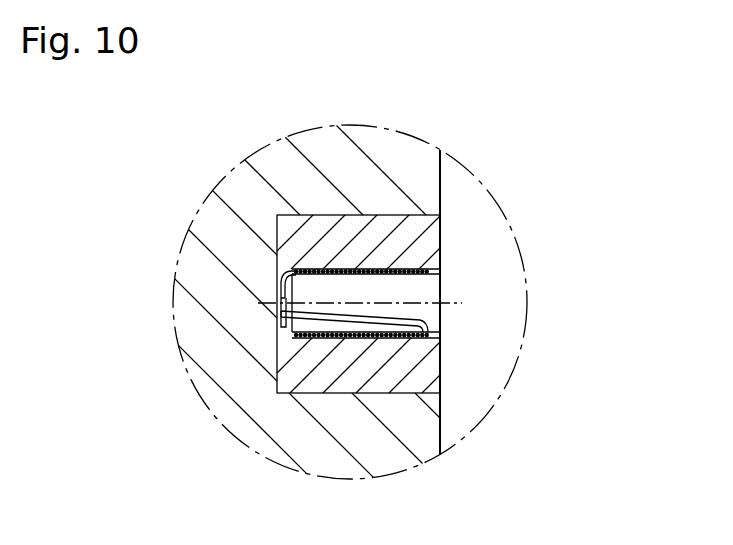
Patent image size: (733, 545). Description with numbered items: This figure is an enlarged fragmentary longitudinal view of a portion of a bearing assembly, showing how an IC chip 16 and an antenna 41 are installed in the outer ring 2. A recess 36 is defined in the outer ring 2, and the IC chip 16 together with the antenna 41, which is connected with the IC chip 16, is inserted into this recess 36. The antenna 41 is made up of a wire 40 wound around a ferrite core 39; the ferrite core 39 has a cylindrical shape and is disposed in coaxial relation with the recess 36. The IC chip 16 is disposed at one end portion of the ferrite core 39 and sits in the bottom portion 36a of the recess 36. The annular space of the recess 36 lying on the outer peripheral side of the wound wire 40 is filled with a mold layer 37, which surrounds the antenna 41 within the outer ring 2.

The outer ring 2 is at (215, 228).
The IC chip 16 is at (278, 304).
The recess 36 is at (389, 299).
The bottom portion of recess 36a is at (277, 364).
The mold layer 37 is at (319, 226).
The ferrite core 39 is at (428, 290).
The wire 40 is at (380, 336).
The antenna 41 is at (475, 333).